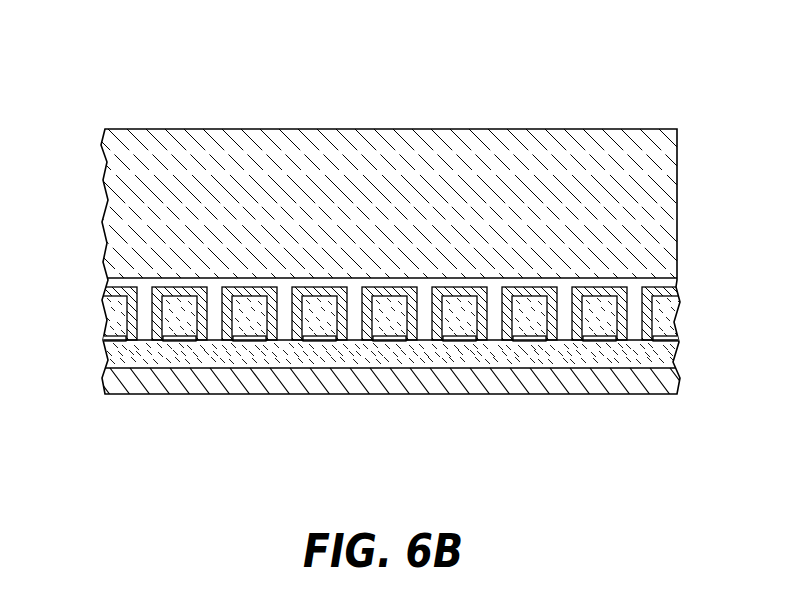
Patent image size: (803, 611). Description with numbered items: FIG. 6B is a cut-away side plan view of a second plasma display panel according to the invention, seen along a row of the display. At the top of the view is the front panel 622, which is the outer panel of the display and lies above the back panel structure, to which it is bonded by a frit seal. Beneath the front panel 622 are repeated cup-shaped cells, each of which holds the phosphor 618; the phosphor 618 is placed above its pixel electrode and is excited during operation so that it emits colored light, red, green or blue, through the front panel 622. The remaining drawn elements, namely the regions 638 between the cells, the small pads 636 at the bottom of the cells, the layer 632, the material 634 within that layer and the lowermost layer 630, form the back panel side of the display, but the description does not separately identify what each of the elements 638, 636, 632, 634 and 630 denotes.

The front panel 622 is at (615, 155).
The phosphor 618 is at (388, 297).
The gap between electrode structures 638 is at (285, 297).
The contact pad 636 is at (172, 342).
The intermediate layer 632 is at (417, 393).
The filler material of intermediate layer 634 is at (596, 355).
The bottom substrate layer 630 is at (295, 393).